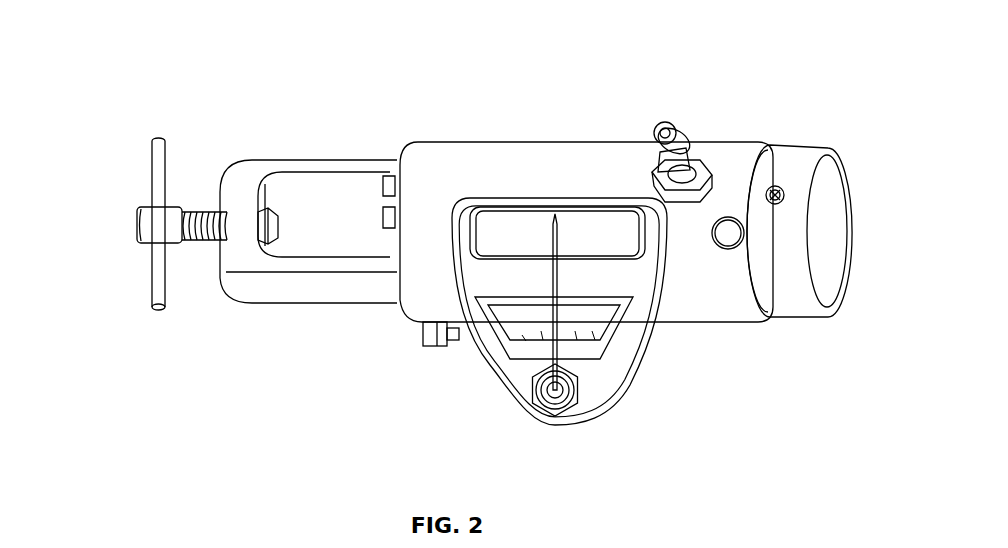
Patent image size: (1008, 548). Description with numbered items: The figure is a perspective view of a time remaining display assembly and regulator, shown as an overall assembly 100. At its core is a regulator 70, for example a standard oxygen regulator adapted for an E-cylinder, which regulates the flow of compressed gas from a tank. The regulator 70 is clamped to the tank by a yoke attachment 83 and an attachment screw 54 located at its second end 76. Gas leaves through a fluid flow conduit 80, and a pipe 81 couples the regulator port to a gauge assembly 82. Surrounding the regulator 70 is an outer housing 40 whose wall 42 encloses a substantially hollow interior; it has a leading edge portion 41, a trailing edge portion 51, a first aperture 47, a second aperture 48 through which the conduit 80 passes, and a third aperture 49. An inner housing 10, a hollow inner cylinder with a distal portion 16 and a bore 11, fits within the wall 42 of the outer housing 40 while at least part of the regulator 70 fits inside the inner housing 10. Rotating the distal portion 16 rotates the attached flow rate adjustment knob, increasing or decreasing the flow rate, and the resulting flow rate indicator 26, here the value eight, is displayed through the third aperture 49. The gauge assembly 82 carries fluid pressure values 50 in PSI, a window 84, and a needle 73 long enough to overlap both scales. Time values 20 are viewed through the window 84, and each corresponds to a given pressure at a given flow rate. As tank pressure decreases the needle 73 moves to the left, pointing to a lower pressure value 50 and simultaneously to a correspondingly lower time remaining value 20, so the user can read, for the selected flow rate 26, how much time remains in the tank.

The pressure regulator assembly 100 is at (152, 36).
The regulator 70 is at (270, 92).
The second end 76 is at (238, 146).
The attachment screw 54 is at (146, 221).
The yoke attachment 83 is at (322, 188).
The outer housing 40 is at (476, 118).
The wall 42 is at (427, 148).
The trailing edge portion 51 is at (404, 306).
The first aperture 47 is at (445, 338).
The pipe 81 is at (431, 330).
The fluid pressure values 50 is at (617, 352).
The window 84 is at (650, 253).
The gauge assembly 82 is at (553, 436).
The needle 73 is at (557, 350).
The time values 20 is at (490, 222).
The fluid flow conduit 80 is at (684, 150).
The second aperture 48 is at (713, 186).
The flow rate indicator 26 is at (739, 222).
The third aperture 49 is at (742, 244).
The inner housing 10 is at (801, 130).
The distal portion 16 is at (808, 158).
The leading edge portion 41 is at (776, 320).
The bore 11 is at (776, 206).